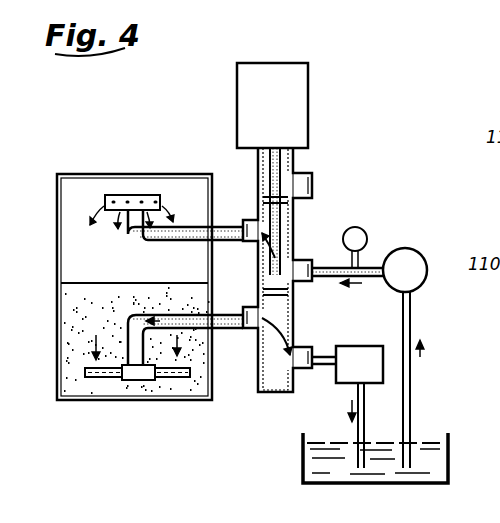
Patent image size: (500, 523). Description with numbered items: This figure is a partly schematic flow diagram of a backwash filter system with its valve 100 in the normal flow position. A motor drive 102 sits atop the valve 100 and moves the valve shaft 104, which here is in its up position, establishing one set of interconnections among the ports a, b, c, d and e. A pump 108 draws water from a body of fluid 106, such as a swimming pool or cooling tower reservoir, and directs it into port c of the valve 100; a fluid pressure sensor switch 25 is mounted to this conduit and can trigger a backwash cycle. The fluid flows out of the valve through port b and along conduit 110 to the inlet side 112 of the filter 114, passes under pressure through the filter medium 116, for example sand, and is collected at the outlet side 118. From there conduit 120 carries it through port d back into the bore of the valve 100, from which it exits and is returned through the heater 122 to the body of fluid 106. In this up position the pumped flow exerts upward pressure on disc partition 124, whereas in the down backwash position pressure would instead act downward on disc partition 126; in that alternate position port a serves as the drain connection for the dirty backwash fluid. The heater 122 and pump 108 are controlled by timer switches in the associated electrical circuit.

The valve 100 is at (268, 393).
The motor drive 102 is at (298, 97).
The valve shaft 104 is at (283, 158).
The body of fluid 106 is at (430, 442).
The pump 108 is at (414, 258).
The conduit 110 is at (172, 240).
The inlet side 112 is at (136, 196).
The filter 114 is at (78, 168).
The filter medium 116 is at (95, 291).
The outlet side 118 is at (106, 380).
The conduit 120 is at (200, 329).
The heater 122 is at (342, 383).
The disc partition 124 is at (295, 203).
The disc partition 126 is at (295, 292).
The fluid pressure sensor switch 25 is at (366, 236).
The port a is at (313, 185).
The port b is at (248, 224).
The port c is at (312, 262).
The port d is at (250, 315).
The port e is at (315, 352).